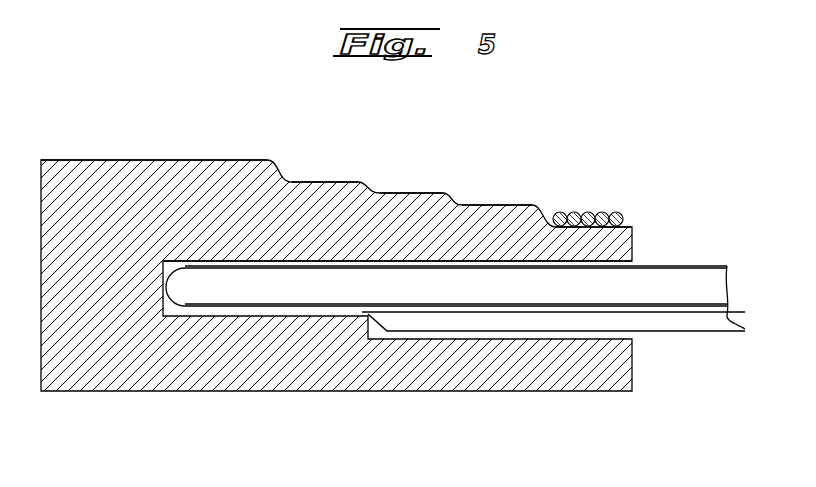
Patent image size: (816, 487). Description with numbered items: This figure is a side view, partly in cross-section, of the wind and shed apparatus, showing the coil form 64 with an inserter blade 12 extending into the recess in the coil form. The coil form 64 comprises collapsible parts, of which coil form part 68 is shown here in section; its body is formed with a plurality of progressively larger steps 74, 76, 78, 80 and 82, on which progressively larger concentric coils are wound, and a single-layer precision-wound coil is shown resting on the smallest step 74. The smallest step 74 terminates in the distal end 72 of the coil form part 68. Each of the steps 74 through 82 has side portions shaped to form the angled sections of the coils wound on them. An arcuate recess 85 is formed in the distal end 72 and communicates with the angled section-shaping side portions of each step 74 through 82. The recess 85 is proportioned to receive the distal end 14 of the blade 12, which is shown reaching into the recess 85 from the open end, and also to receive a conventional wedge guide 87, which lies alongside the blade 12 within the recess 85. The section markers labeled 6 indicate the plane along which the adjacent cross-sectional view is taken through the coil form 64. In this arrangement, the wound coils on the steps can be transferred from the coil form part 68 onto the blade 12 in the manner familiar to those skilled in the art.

The section line 6- 6 is at (647, 55).
The blade 12 is at (714, 283).
The distal end of blade 14 is at (174, 292).
The coil form 64 is at (756, 465).
The coil form part 68 is at (623, 141).
The distal end of coil form part 72 is at (633, 228).
The smallest step 74 is at (604, 229).
The step 76 is at (488, 204).
The step 78 is at (410, 192).
The step 80 is at (327, 181).
The largest step 82 is at (256, 158).
The arcuate recess 85 is at (592, 260).
The wedge guide 87 is at (690, 320).